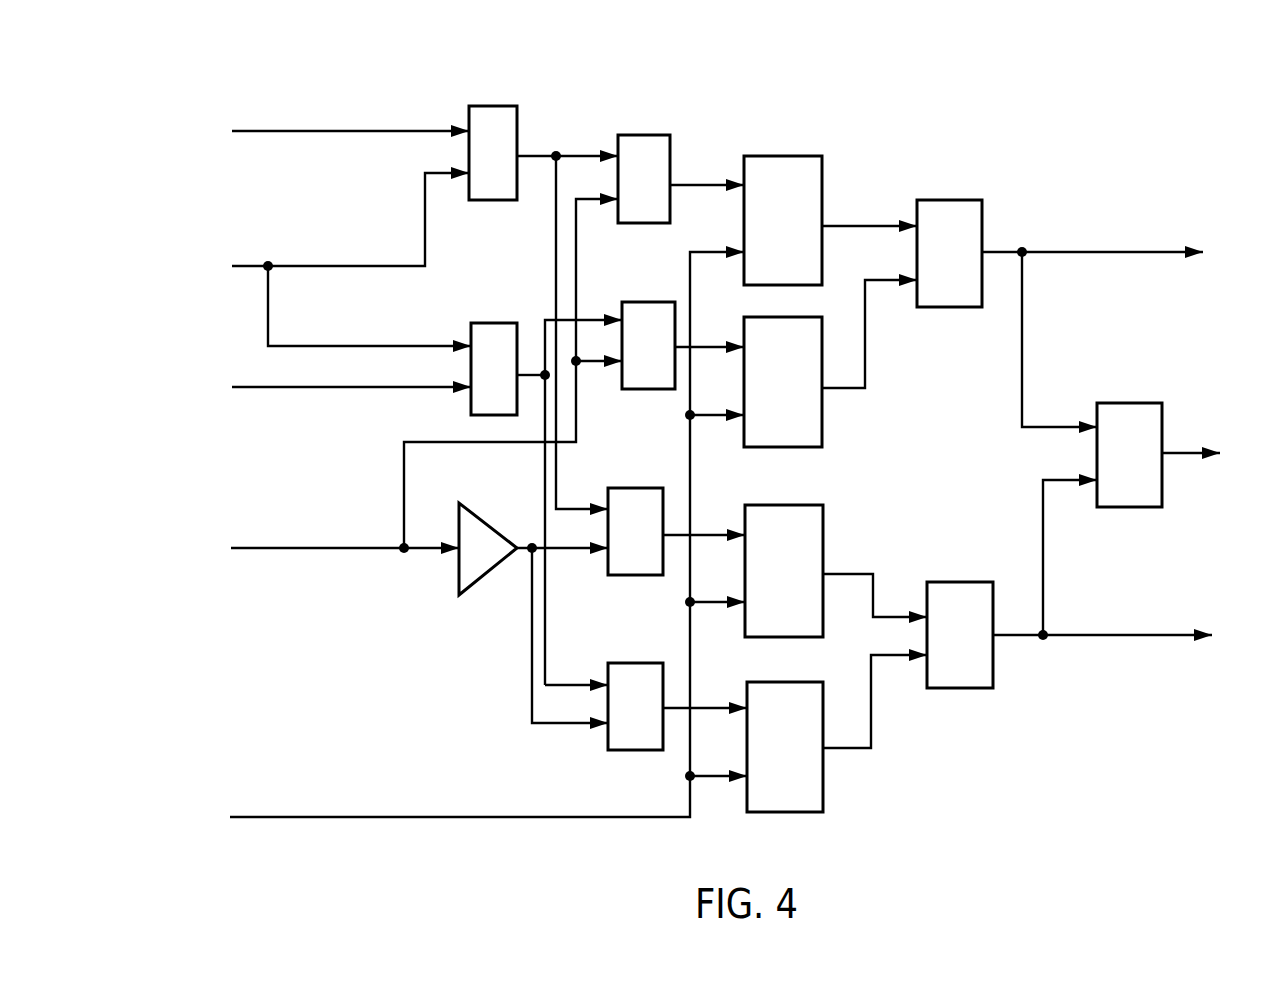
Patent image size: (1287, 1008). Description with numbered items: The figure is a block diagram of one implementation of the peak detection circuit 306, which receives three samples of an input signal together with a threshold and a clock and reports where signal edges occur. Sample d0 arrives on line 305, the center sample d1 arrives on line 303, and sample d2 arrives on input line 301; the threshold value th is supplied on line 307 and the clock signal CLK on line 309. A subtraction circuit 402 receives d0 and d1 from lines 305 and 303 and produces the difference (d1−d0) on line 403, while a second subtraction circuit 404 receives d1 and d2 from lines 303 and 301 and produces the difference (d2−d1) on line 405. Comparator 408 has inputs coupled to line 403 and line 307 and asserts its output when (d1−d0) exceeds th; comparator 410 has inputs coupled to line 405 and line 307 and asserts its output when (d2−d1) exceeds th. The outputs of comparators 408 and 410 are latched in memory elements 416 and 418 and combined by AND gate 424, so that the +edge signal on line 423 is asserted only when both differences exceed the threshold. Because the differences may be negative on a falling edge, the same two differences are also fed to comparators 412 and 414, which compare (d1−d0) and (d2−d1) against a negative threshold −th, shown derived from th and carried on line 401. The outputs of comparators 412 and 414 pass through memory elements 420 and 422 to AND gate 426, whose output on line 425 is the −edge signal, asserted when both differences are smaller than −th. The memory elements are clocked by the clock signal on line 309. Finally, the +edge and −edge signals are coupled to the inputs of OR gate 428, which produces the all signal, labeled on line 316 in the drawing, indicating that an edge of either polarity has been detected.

The peak detection circuit 306 is at (1180, 100).
The line 305 is at (283, 131).
The line 303 is at (251, 263).
The input line 301 is at (252, 384).
The line 307 is at (262, 545).
The line 309 is at (275, 816).
The subtraction circuit 402 is at (492, 106).
The subtraction circuit 404 is at (493, 323).
The line 403 is at (534, 155).
The line 405 is at (543, 342).
The negated threshold signal 401 is at (532, 689).
The comparator 408 is at (645, 135).
The comparator 410 is at (642, 302).
The comparator 412 is at (637, 488).
The comparator 414 is at (637, 663).
The memory element 416 is at (795, 156).
The memory element 418 is at (824, 418).
The memory element 420 is at (825, 531).
The memory element 422 is at (800, 812).
The AND gate 424 is at (951, 200).
The AND gate 426 is at (961, 582).
The OR gate 428 is at (1130, 402).
The line 423 is at (1084, 250).
The line 425 is at (1080, 640).
The all edges output signal 316 is at (1190, 458).